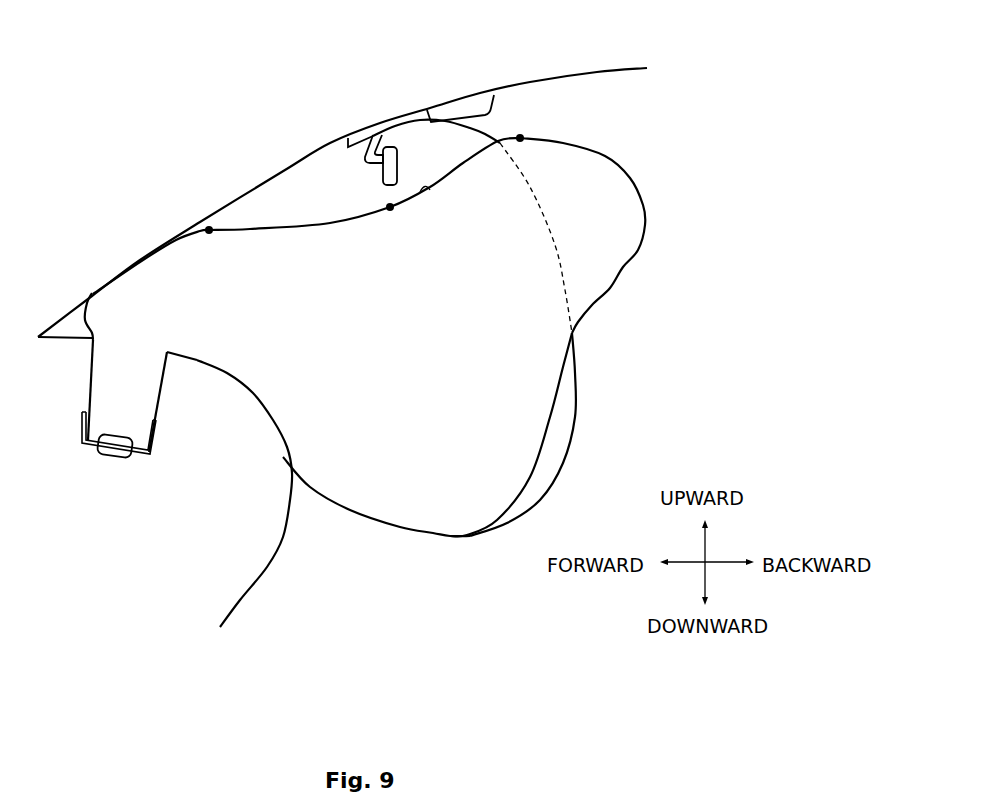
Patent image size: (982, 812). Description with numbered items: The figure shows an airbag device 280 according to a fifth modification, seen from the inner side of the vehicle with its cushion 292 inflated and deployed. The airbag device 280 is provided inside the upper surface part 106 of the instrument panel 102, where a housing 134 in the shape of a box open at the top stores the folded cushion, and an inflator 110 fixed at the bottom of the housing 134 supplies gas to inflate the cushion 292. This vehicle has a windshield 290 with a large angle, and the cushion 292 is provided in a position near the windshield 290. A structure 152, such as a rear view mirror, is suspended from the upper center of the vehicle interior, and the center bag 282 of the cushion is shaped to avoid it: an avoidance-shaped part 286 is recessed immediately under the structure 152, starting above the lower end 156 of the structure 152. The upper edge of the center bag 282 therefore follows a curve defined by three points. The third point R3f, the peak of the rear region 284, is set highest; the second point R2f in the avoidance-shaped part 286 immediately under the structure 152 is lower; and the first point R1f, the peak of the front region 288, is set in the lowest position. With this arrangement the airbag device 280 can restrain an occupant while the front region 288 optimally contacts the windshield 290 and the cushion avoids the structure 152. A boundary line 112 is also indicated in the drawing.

The airbag device 280 is at (135, 102).
The windshield 290 is at (285, 170).
The front region 288 is at (255, 247).
The first point R1f is at (209, 232).
The second point R2f is at (388, 208).
The third point R3f is at (523, 137).
The structure 152 is at (388, 140).
The lower end 156 is at (400, 186).
The cushion 292 is at (498, 135).
The boundary line 112 is at (522, 133).
The rear region 284 is at (605, 166).
The center bag 282 is at (644, 192).
The avoidance-shaped part 286 is at (426, 190).
The instrument panel 102 is at (264, 577).
The upper surface part 106 is at (183, 352).
The housing 134 is at (153, 443).
The inflator 110 is at (112, 458).